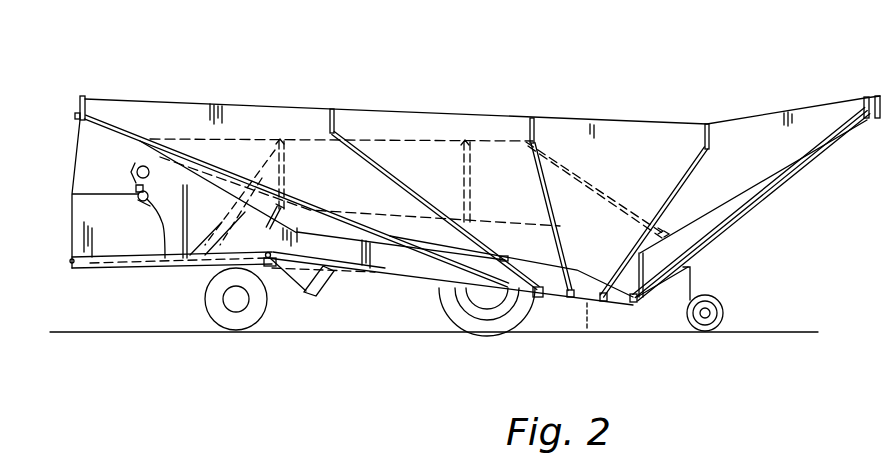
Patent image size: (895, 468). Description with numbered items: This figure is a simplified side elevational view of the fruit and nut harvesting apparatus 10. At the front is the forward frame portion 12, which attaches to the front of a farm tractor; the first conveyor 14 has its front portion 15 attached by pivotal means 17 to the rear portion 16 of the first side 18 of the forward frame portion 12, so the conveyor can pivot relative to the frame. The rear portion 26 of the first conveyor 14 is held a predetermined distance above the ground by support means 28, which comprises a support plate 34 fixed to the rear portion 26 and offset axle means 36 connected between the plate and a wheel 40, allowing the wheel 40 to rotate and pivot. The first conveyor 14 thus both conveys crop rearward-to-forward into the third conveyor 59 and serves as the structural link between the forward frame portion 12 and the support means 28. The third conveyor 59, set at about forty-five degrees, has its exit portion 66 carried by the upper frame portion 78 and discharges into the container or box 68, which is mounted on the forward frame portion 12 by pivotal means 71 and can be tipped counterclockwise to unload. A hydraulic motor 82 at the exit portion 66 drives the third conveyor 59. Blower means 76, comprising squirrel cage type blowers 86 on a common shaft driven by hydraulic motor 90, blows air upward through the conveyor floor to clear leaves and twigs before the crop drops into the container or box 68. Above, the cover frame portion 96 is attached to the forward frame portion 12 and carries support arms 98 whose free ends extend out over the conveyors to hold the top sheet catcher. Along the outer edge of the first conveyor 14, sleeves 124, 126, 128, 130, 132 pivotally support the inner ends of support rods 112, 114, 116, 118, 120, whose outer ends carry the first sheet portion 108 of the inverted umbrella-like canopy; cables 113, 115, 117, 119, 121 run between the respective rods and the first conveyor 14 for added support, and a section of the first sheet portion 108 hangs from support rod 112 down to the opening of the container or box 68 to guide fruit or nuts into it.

The fruit and nut harvesting apparatus 10 is at (478, 62).
The forward frame portion 12 is at (131, 273).
The first conveyor 14 is at (437, 268).
The front portion of first conveyor 15 is at (327, 255).
The rear portion of first side 16 is at (305, 287).
The pivotal means 17 is at (270, 264).
The first side of forward frame portion 18 is at (232, 300).
The rear portion of first conveyor 26 is at (618, 298).
The support means 28 is at (705, 285).
The support plate 34 is at (665, 287).
The offset axle means 36 is at (691, 269).
The wheel 40 is at (726, 318).
The third conveyor 59 is at (230, 257).
The exit portion of third conveyor 66 is at (137, 178).
The container or box 68 is at (80, 218).
The pivotal means 71 is at (70, 261).
The blower means 76 is at (138, 205).
The upper frame portion 78 is at (182, 250).
The hydraulic motor 82 is at (137, 167).
The squirrel cage type blower 86 is at (135, 201).
The hydraulic motor 90 is at (158, 215).
The cover frame portion 96 is at (442, 140).
The support arms 98 is at (283, 193).
The first sheet portion 108 is at (255, 111).
The support rod 112 is at (117, 118).
The cable 113 is at (422, 236).
The support rod 114 is at (375, 140).
The cable 115 is at (508, 241).
The support rod 116 is at (547, 177).
The cable 117 is at (577, 237).
The support rod 118 is at (687, 167).
The cable 119 is at (618, 235).
The support rod 120 is at (790, 173).
The cable 121 is at (722, 215).
The sleeve 124 is at (517, 305).
The sleeve 126 is at (527, 290).
The sleeve 128 is at (567, 297).
The sleeve 130 is at (597, 302).
The sleeve 132 is at (643, 300).